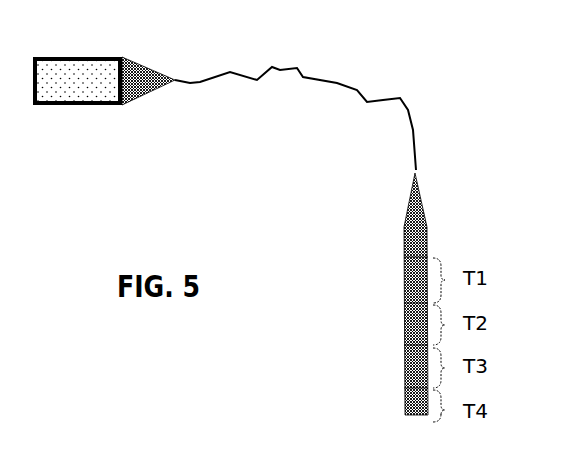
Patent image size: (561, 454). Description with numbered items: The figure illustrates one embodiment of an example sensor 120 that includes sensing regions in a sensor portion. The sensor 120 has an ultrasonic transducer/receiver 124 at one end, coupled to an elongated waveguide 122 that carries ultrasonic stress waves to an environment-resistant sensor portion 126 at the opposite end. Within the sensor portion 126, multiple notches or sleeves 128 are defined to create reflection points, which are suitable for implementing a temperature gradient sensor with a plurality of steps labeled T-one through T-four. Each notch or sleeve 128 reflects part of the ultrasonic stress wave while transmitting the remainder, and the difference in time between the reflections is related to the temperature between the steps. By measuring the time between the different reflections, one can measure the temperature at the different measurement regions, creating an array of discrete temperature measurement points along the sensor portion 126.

The sensor 120 is at (452, 135).
The waveguide 122 is at (273, 65).
The ultrasonic transducer/receiver 124 is at (101, 53).
The environment-resistant sensor portion 126 is at (423, 223).
The notches or sleeves 128 is at (405, 255).